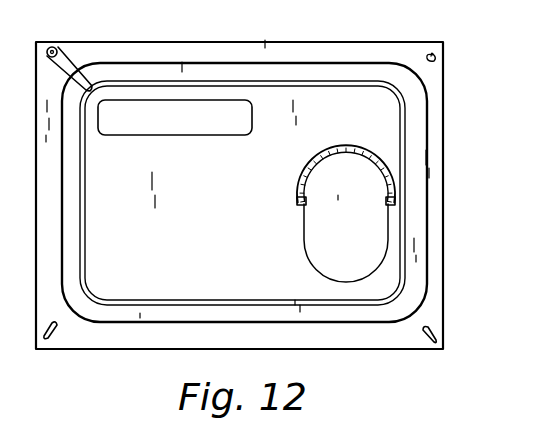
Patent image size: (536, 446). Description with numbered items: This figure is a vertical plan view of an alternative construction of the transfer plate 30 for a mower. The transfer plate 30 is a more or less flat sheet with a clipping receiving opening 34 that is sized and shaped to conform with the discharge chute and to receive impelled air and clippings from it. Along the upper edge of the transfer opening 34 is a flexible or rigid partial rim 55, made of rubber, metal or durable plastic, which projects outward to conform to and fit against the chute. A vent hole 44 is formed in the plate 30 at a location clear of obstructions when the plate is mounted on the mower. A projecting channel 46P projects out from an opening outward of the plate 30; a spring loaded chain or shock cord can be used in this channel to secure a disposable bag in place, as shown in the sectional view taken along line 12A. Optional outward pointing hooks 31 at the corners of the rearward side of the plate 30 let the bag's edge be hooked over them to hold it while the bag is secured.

The transfer plate 30 is at (446, 278).
The outward pointing hooks 31 is at (434, 60).
The projecting channel 46P is at (193, 73).
The vent hole 44 is at (190, 127).
The partial rim 55 is at (298, 181).
The clipping receiving opening 34 is at (362, 234).
The section line 12A is at (322, 115).